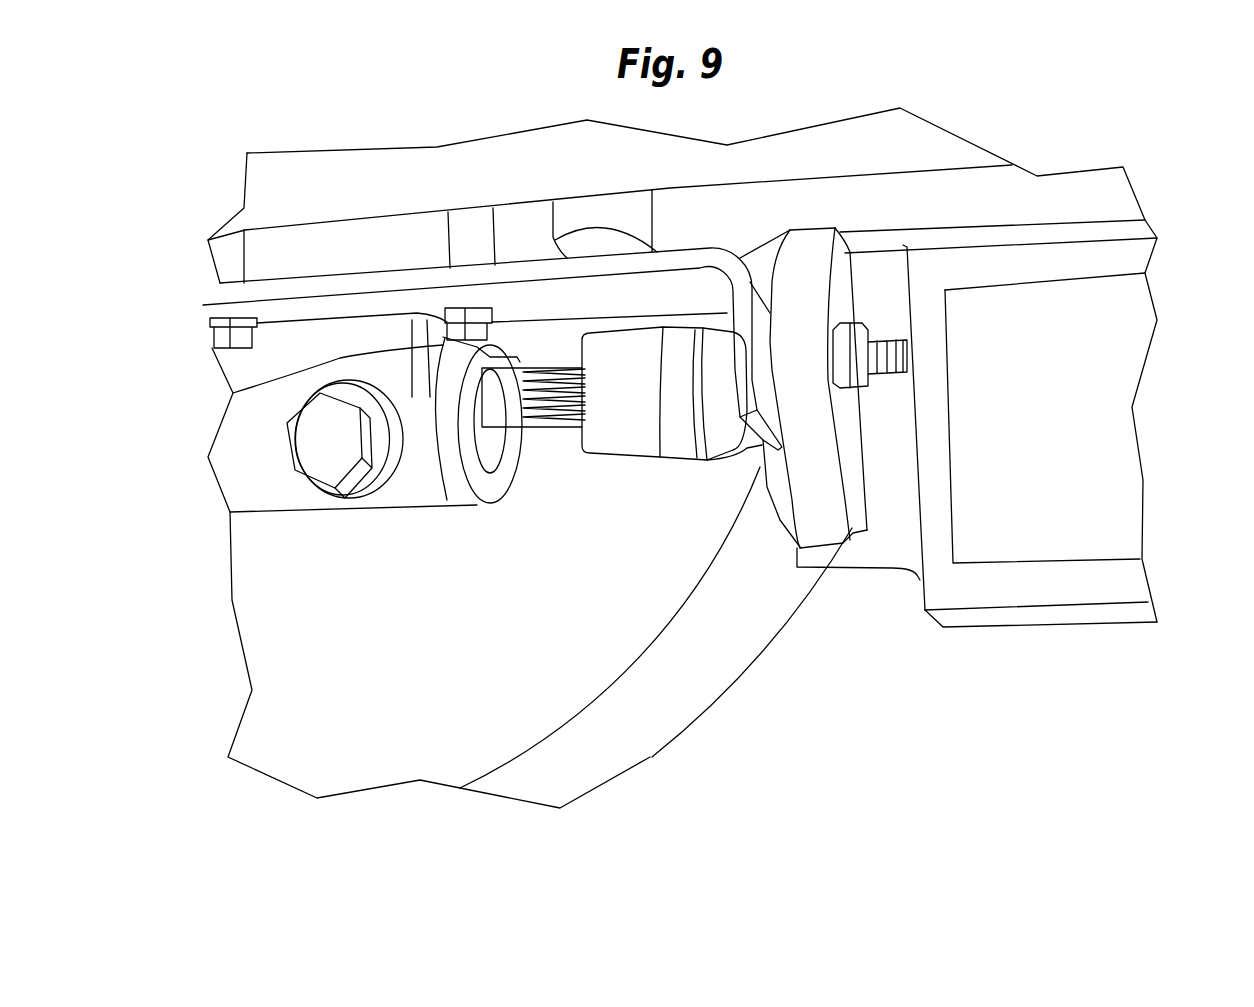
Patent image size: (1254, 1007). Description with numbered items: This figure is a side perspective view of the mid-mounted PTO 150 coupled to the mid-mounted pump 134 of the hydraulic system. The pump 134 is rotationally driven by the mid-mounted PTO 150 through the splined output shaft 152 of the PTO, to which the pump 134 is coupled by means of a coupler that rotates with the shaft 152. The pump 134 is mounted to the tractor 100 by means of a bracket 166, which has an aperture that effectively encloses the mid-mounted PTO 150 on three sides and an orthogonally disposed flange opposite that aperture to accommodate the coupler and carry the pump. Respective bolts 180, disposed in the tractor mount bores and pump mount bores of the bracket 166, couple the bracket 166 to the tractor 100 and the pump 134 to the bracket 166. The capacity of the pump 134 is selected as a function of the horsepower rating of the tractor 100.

The tractor 100 is at (990, 197).
The mid-mounted pump 134 is at (955, 620).
The mid-mounted PTO 150 is at (497, 492).
The splined output shaft 152 is at (527, 420).
The bracket 166 is at (633, 287).
The bolts 180 is at (843, 336).